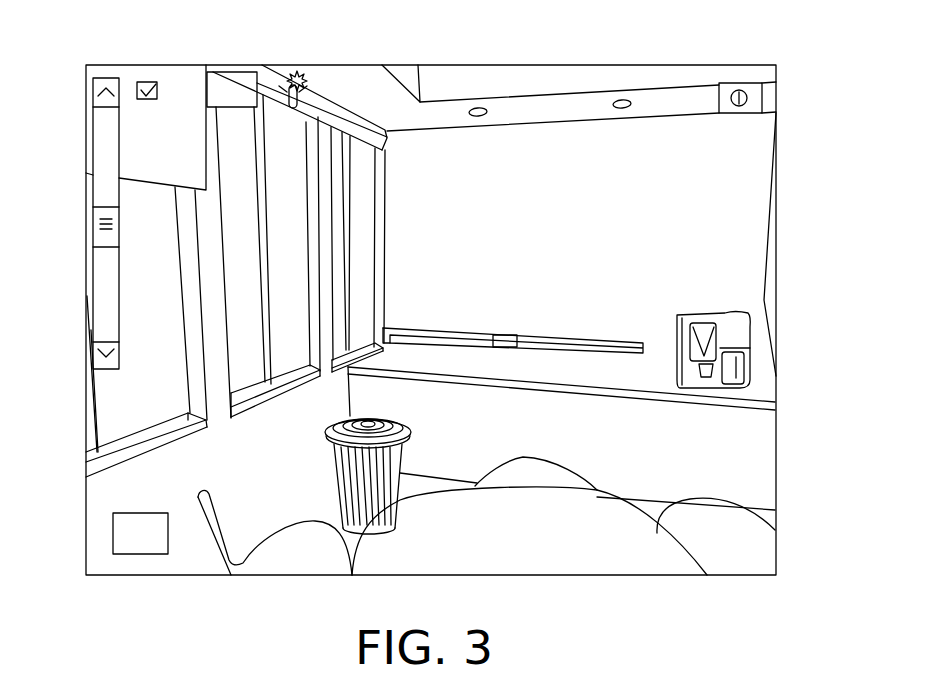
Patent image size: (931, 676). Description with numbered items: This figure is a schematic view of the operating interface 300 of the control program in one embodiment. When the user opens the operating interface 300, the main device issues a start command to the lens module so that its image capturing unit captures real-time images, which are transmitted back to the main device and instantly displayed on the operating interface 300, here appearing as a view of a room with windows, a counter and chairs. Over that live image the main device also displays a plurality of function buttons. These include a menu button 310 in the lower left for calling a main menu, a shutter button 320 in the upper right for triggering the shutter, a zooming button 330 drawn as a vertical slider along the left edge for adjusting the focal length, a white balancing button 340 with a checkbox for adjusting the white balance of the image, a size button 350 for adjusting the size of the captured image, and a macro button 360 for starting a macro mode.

The operating interface 300 is at (777, 492).
The menu button 310 is at (113, 540).
The shutter button 320 is at (762, 102).
The zooming button 330 is at (102, 78).
The white balancing button 340 is at (182, 72).
The size button 350 is at (233, 66).
The macro button 360 is at (294, 73).